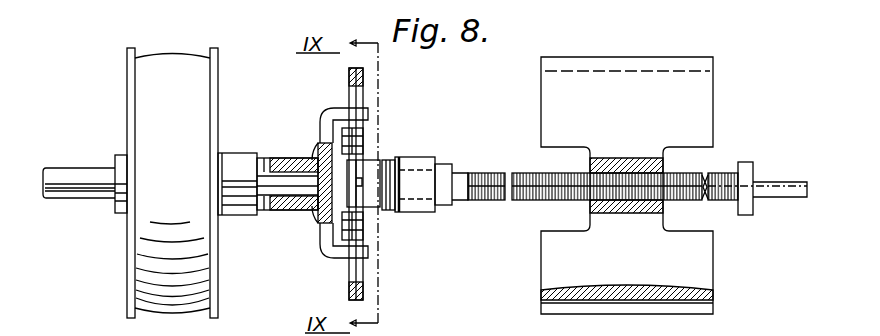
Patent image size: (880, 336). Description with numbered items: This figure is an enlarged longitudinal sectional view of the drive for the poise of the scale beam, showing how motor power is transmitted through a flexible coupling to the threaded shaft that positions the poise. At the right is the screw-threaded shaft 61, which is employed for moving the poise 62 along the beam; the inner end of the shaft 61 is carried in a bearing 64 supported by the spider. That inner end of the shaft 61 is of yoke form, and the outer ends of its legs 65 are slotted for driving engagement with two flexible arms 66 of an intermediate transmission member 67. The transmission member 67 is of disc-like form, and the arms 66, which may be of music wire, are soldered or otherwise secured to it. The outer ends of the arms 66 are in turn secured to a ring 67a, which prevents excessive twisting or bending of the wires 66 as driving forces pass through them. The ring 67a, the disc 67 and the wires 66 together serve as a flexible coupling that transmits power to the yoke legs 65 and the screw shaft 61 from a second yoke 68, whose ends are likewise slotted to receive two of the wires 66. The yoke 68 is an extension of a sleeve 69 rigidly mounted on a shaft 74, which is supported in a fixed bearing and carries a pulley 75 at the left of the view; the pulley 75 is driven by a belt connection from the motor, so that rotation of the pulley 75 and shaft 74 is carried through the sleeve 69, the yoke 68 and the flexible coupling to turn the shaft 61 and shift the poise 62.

The screw-threaded shaft 61 is at (500, 177).
The poise 62 is at (546, 97).
The bearing 64 is at (422, 167).
The legs 65 is at (363, 172).
The flexible arms 66 is at (363, 95).
The intermediate transmission member 67 is at (360, 228).
The ring 67a is at (346, 292).
The yoke 68 is at (330, 116).
The sleeve 69 is at (270, 160).
The shaft 74 is at (74, 177).
The pulley 75 is at (147, 78).